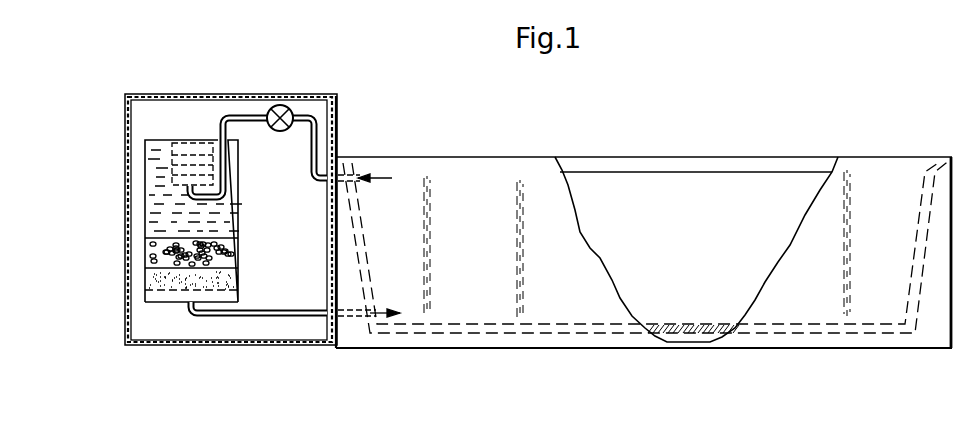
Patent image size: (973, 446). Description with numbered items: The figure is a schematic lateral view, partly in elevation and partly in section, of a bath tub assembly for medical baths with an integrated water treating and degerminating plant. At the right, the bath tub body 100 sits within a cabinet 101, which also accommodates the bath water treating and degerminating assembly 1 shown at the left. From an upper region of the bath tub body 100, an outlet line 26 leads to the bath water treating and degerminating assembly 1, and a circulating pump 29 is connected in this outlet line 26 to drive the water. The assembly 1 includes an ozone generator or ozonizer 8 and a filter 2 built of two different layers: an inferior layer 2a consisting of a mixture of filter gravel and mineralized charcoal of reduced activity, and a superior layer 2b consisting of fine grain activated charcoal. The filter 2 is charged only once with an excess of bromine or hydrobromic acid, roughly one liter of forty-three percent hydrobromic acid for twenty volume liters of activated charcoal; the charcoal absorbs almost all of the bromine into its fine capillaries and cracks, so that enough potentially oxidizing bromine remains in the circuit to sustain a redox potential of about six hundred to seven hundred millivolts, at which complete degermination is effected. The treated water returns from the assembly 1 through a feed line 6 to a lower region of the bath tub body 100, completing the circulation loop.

The bath water treating and degerminating assembly 1 is at (145, 199).
The filter 2 is at (177, 260).
The inferior layer 2a is at (158, 283).
The superior layer 2b is at (147, 248).
The feed line 6 is at (263, 314).
The ozone generator or ozonizer 8 is at (175, 152).
The outlet line 26 is at (311, 112).
The circulating pump 29 is at (277, 105).
The bath tub body 100 is at (724, 172).
The cabinet 101 is at (820, 348).